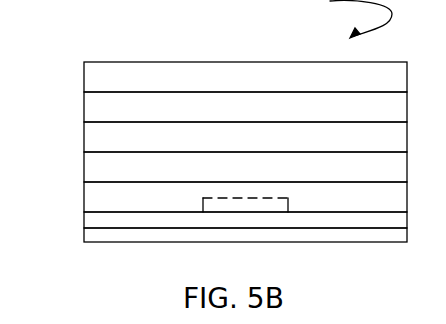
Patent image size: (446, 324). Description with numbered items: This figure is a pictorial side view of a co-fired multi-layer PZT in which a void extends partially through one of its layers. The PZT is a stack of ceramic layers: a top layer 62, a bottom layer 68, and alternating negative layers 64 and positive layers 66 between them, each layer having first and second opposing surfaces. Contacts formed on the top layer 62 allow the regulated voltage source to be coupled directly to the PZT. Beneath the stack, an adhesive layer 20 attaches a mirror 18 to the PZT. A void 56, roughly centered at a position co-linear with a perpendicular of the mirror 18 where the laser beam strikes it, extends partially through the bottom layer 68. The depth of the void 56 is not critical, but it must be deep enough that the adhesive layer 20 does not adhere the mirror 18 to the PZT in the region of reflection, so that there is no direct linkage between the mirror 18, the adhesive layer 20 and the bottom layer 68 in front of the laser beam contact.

The top layer 62 is at (84, 77).
The negative layer 64 is at (84, 105).
The positive layer 66 is at (84, 133).
The bottom layer 68 is at (84, 197).
The adhesive layer 20 is at (84, 218).
The mirror 18 is at (84, 238).
The void 56 is at (211, 200).